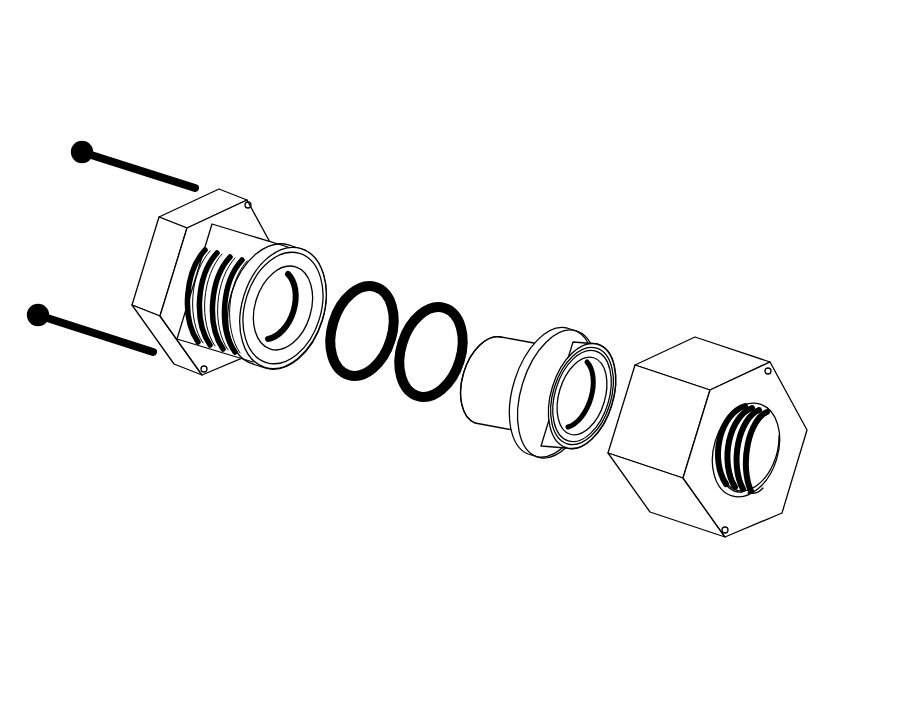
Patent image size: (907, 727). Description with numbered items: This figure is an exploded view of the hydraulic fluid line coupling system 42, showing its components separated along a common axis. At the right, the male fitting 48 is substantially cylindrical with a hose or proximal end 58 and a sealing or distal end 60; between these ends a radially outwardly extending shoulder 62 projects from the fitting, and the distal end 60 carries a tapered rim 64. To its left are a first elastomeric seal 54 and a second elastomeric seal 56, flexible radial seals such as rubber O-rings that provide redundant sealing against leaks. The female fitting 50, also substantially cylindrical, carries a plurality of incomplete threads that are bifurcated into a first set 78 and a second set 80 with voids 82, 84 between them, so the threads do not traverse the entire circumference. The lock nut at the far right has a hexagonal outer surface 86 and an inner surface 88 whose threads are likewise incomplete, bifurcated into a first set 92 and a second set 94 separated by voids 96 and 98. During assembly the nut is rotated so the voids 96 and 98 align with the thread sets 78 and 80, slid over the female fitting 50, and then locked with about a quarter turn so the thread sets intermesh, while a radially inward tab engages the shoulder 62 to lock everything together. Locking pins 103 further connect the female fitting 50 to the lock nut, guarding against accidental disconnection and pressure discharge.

The hydraulic fluid line coupling system 42 is at (572, 96).
The male fitting 48 is at (586, 300).
The female fitting 50 is at (262, 146).
The first elastomeric seal 54 is at (387, 274).
The second elastomeric seal 56 is at (450, 308).
The proximal end 58 is at (608, 357).
The distal end 60 is at (493, 356).
The shoulder 62 is at (522, 437).
The tapered rim 64 is at (471, 390).
The first set of threads 78 is at (237, 372).
The second set of threads 80 is at (317, 257).
The void 82 is at (255, 247).
The void 84 is at (290, 365).
The hexagonal outer surface 86 is at (708, 357).
The inner surface 88 is at (762, 493).
The first set of lock nut threads 92 is at (787, 456).
The second set of lock nut threads 94 is at (725, 495).
The void 96 is at (730, 492).
The void 98 is at (750, 420).
The locking pins 103 is at (133, 163).